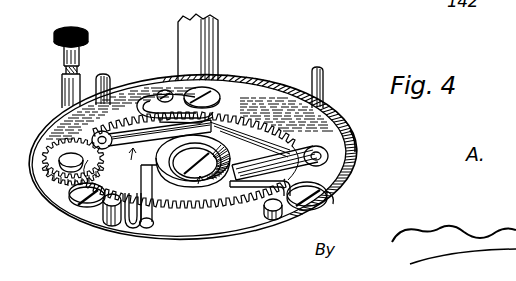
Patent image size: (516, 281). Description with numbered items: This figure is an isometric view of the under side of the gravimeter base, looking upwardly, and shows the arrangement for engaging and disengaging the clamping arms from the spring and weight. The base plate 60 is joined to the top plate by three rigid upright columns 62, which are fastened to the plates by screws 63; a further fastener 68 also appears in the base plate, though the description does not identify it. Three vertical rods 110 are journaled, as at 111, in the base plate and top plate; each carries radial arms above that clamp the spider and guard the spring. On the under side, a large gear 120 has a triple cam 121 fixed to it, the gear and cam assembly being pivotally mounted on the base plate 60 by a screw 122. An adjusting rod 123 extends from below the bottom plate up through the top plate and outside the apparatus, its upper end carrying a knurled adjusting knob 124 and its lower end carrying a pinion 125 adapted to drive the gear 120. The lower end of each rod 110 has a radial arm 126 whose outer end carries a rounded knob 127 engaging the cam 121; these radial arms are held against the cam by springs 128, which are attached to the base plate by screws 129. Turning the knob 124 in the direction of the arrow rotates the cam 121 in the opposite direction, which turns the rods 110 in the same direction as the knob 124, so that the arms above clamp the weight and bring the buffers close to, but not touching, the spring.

The base plate 60 is at (352, 175).
The rigid upright column 62 is at (219, 44).
The screw 63 is at (88, 203).
The screw 68 is at (310, 207).
The vertical rod 110 is at (108, 70).
The journal 111 is at (342, 146).
The large gear 120 is at (250, 113).
The triple cam 121 is at (215, 108).
The screw 122 is at (197, 176).
The adjusting rod 123 is at (66, 96).
The knurled adjusting knob 124 is at (87, 36).
The pinion 125 is at (55, 172).
The radial arm 126 is at (329, 195).
The rounded knob 127 is at (233, 190).
The spring 128 is at (284, 219).
The screw 129 is at (110, 212).